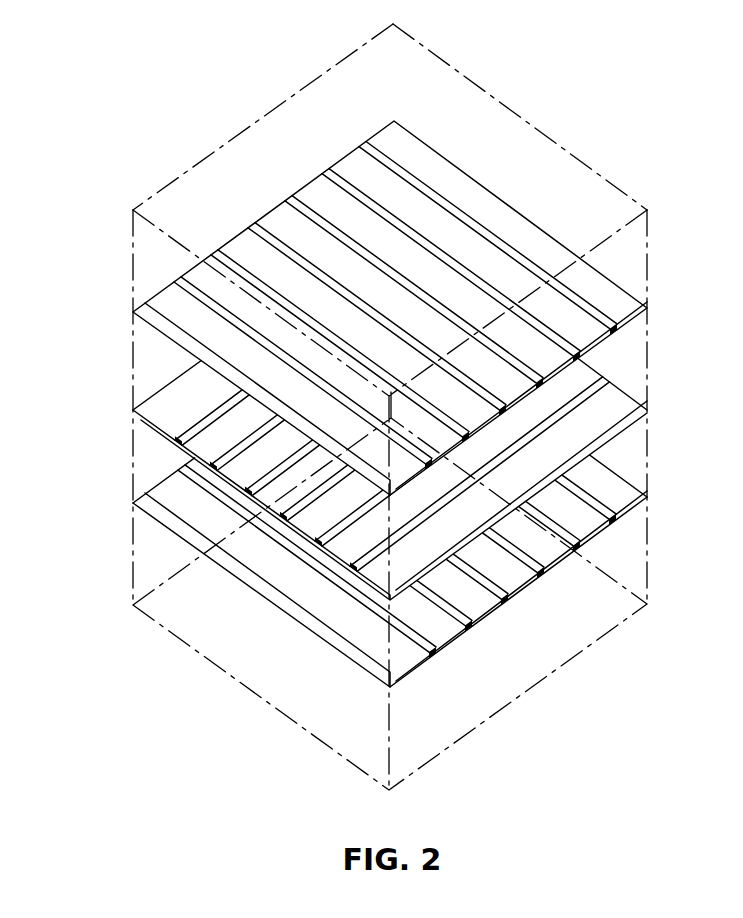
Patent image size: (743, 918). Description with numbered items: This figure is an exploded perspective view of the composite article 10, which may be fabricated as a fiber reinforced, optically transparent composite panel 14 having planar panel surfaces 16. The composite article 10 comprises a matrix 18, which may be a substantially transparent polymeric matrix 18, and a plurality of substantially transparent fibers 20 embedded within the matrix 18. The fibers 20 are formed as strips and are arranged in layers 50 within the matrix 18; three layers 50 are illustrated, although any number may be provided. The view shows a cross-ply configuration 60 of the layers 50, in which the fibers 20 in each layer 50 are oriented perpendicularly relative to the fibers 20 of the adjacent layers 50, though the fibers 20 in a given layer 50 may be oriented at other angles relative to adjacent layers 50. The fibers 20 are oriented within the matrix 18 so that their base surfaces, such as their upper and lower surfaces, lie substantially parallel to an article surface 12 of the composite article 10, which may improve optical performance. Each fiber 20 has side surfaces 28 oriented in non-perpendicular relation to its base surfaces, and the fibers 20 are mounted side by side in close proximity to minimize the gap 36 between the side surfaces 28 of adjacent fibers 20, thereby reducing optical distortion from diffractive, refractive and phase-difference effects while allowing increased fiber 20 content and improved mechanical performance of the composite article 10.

The composite article 10 is at (246, 131).
The article surface 12 is at (320, 104).
The composite panel 14 is at (453, 68).
The panel surfaces 16 is at (487, 125).
The matrix 18 is at (197, 633).
The fibers 20 is at (600, 345).
The side surfaces 28 is at (622, 420).
The gap 36 is at (499, 299).
The layers 50 is at (133, 503).
The cross-ply configuration 60 is at (1, 627).